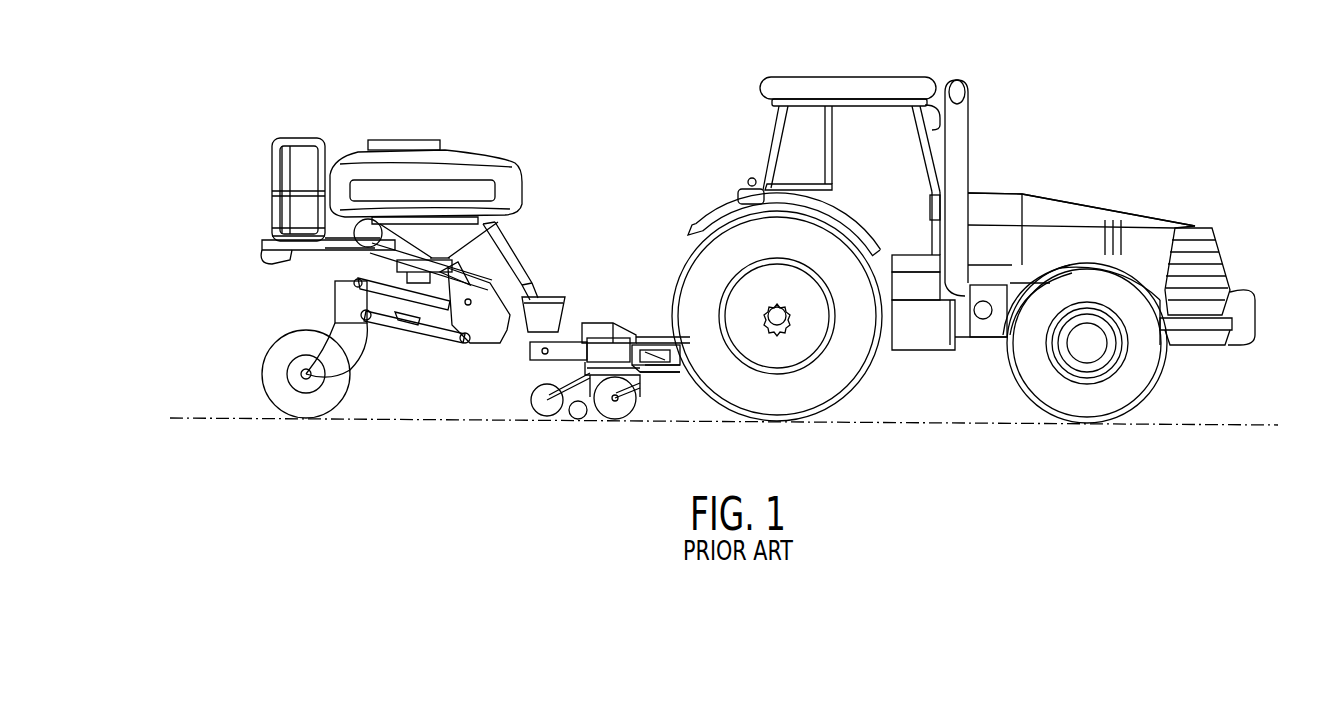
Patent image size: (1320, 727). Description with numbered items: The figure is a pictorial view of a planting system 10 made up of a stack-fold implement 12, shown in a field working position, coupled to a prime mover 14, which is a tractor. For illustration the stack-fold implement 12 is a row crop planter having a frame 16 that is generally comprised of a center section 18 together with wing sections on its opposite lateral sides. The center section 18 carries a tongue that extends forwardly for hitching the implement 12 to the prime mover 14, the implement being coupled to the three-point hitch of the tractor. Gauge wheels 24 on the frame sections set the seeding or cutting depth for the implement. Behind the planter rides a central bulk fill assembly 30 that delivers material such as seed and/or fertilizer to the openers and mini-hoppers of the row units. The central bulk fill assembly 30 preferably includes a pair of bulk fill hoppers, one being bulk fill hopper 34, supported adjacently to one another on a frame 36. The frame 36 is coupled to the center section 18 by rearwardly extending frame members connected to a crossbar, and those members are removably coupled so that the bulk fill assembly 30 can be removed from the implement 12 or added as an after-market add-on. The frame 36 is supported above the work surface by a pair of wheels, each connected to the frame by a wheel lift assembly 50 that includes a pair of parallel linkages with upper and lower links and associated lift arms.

The planting system 10 is at (1004, 112).
The stack-fold implement 12 is at (618, 275).
The prime mover 14 is at (985, 170).
The frame 16 is at (668, 377).
The center section 18 is at (656, 338).
The gauge wheels 24 is at (618, 402).
The central bulk fill assembly 30 is at (355, 110).
The bulk fill hopper 34 is at (446, 160).
The frame 36 is at (378, 243).
The wheel lift assembly 50 is at (420, 340).